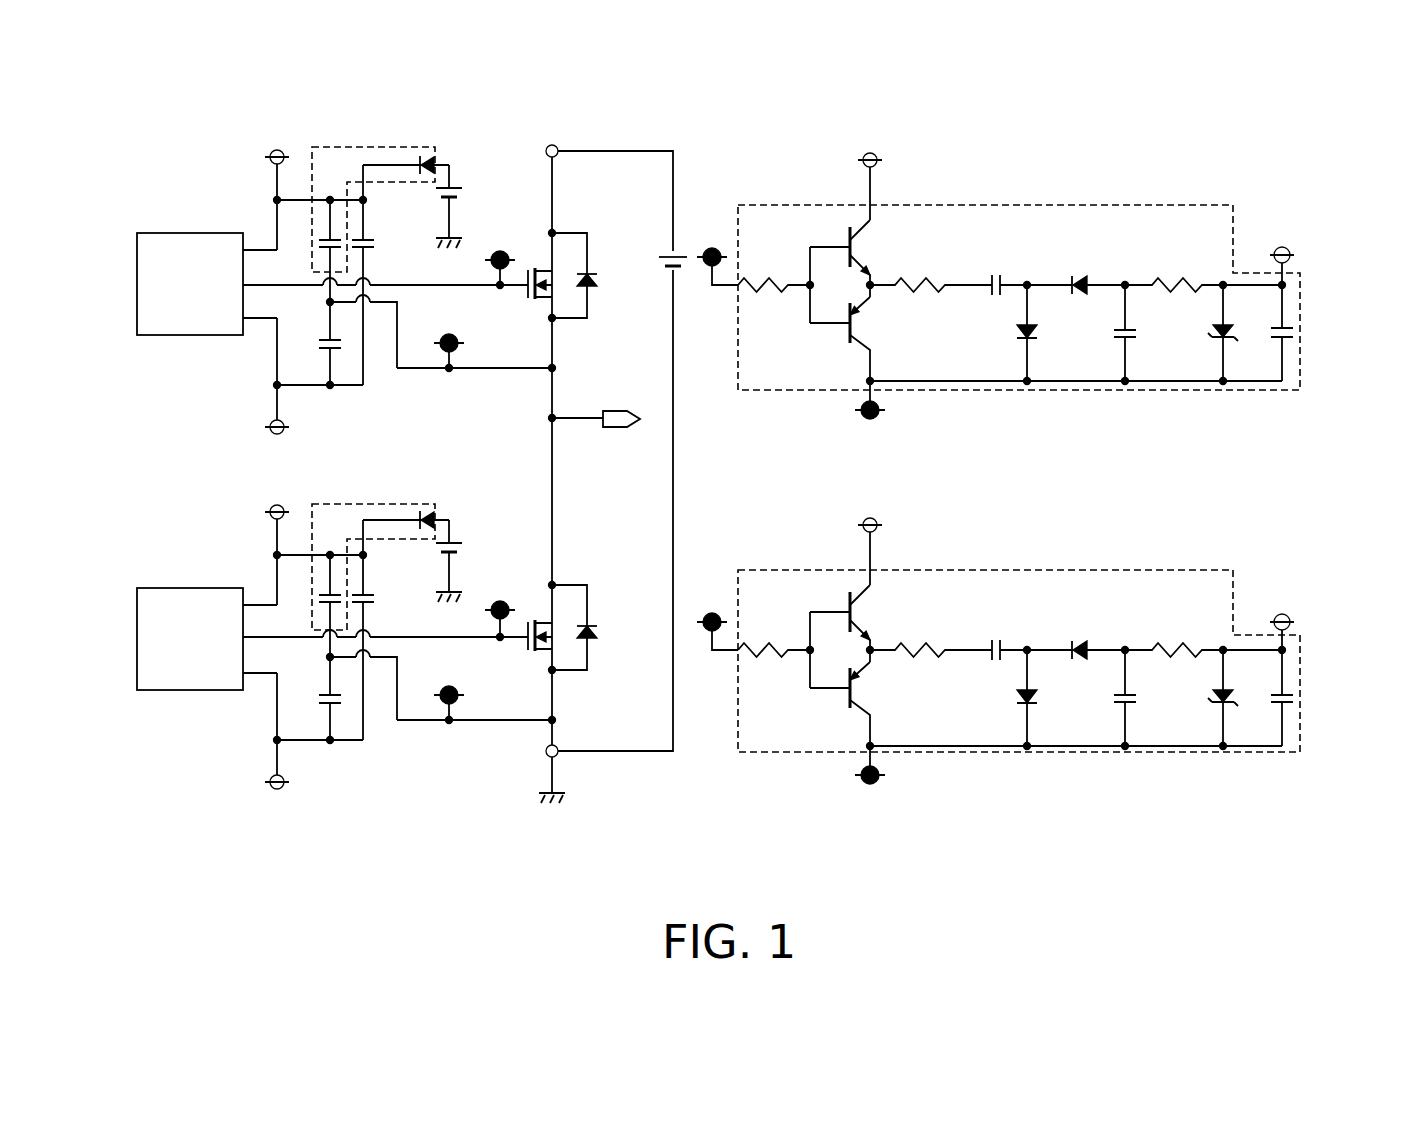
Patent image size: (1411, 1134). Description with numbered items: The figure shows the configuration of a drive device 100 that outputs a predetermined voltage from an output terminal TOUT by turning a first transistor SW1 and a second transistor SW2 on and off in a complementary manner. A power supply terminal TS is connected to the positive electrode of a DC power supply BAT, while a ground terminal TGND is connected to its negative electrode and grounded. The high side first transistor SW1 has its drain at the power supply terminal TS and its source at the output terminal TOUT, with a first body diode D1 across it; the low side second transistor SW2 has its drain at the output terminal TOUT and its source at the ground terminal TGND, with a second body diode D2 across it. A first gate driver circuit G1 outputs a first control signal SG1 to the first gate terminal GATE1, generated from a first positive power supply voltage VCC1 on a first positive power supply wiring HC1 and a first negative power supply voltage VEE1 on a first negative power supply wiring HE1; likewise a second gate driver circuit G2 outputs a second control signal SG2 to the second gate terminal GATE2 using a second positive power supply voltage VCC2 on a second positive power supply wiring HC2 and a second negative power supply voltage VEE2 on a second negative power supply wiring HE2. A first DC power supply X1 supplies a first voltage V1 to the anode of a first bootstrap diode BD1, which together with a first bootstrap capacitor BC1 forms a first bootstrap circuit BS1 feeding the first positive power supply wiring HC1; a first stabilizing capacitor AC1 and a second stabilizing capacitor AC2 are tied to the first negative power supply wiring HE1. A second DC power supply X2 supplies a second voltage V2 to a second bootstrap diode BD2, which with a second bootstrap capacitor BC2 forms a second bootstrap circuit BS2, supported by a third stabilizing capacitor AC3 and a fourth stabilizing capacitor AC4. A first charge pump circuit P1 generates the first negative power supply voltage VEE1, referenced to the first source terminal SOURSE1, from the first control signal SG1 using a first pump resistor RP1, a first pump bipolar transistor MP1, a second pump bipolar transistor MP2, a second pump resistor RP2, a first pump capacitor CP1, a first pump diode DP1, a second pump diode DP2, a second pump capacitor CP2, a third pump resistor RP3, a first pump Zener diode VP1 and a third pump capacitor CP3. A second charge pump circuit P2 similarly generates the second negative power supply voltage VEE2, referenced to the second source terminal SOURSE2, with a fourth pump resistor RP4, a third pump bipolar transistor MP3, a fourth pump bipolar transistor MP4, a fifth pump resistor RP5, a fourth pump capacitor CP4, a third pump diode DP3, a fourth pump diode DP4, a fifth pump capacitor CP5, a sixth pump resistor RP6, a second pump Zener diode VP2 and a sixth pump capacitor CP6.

The drive device 100 is at (758, 856).
The power supply terminal TS is at (603, 434).
The DC power supply BAT is at (662, 253).
The ground terminal TGND is at (591, 774).
The output terminal TOUT is at (602, 401).
The first transistor SW1 is at (526, 488).
The second transistor SW2 is at (526, 653).
The first body diode D1 is at (591, 282).
The second body diode D2 is at (591, 629).
The first gate terminal GATE1 is at (604, 251).
The second gate terminal GATE2 is at (601, 611).
The first control signal SG1 is at (483, 276).
The second control signal SG2 is at (483, 626).
The first source terminal SOURSE1 is at (712, 367).
The second source terminal SOURSE2 is at (712, 726).
The first gate driver circuit G1 is at (246, 265).
The second gate driver circuit G2 is at (246, 622).
The first positive power supply voltage VCC1 is at (570, 183).
The second positive power supply voltage VCC2 is at (570, 539).
The first positive power supply wiring HC1 is at (272, 159).
The second positive power supply wiring HC2 is at (272, 514).
The first negative power supply wiring HE1 is at (270, 424).
The second negative power supply wiring HE2 is at (270, 780).
The first negative power supply voltage VEE1 is at (775, 339).
The second negative power supply voltage VEE2 is at (775, 701).
The first bootstrap circuit BS1 is at (345, 147).
The second bootstrap circuit BS2 is at (373, 504).
The first bootstrap diode BD1 is at (412, 139).
The second bootstrap diode BD2 is at (415, 495).
The first voltage V1 is at (454, 163).
The second voltage V2 is at (454, 518).
The first DC power supply X1 is at (469, 206).
The second DC power supply X2 is at (469, 561).
The first bootstrap capacitor BC1 is at (326, 283).
The second bootstrap capacitor BC2 is at (338, 636).
The first stabilizing capacitor AC1 is at (319, 345).
The second stabilizing capacitor AC2 is at (388, 275).
The third stabilizing capacitor AC3 is at (319, 700).
The fourth stabilizing capacitor AC4 is at (388, 630).
The first charge pump circuit P1 is at (965, 205).
The second charge pump circuit P2 is at (965, 570).
The first pump bipolar transistor MP1 is at (829, 252).
The second pump bipolar transistor MP2 is at (1036, 341).
The third pump bipolar transistor MP3 is at (862, 599).
The fourth pump bipolar transistor MP4 is at (866, 713).
The first pump resistor RP1 is at (794, 284).
The second pump resistor RP2 is at (931, 268).
The third pump resistor RP3 is at (1174, 267).
The fourth pump resistor RP4 is at (794, 655).
The fifth pump resistor RP5 is at (931, 671).
The sixth pump resistor RP6 is at (1174, 633).
The first pump capacitor CP1 is at (1006, 269).
The second pump capacitor CP2 is at (1094, 333).
The third pump capacitor CP3 is at (1290, 332).
The fourth pump capacitor CP4 is at (1008, 642).
The fifth pump capacitor CP5 is at (1115, 695).
The sixth pump capacitor CP6 is at (1345, 678).
The first pump diode DP1 is at (996, 333).
The second pump diode DP2 is at (1076, 268).
The third pump diode DP3 is at (1019, 702).
The fourth pump diode DP4 is at (1082, 645).
The first pump Zener diode VP1 is at (1215, 334).
The second pump Zener diode VP2 is at (1215, 704).